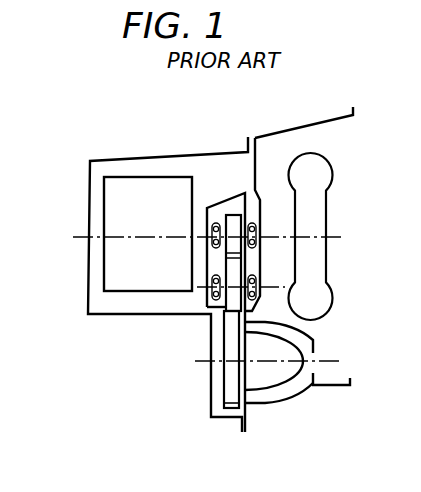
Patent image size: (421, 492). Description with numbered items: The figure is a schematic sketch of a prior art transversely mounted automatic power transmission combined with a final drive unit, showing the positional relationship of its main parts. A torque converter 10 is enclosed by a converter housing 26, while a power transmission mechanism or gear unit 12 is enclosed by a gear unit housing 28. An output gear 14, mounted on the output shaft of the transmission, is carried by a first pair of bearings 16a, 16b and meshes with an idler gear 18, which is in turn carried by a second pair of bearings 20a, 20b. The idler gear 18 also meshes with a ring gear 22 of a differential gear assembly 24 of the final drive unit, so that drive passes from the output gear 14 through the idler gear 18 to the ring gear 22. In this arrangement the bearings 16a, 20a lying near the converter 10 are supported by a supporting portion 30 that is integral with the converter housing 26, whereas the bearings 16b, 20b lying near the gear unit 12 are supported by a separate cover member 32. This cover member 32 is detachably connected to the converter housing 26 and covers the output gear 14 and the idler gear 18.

The torque converter 10 is at (334, 175).
The gear unit 12 is at (108, 260).
The output gear 14 is at (235, 213).
The bearing 16a is at (262, 226).
The bearing 16b is at (215, 222).
The idler gear 18 is at (218, 304).
The bearing 20a is at (256, 300).
The bearing 20b is at (210, 293).
The ring gear 22 is at (227, 390).
The differential gear assembly 24 is at (293, 396).
The converter housing 26 is at (327, 123).
The gear unit housing 28 is at (90, 188).
The supporting portion 30 is at (262, 262).
The cover member 32 is at (208, 268).